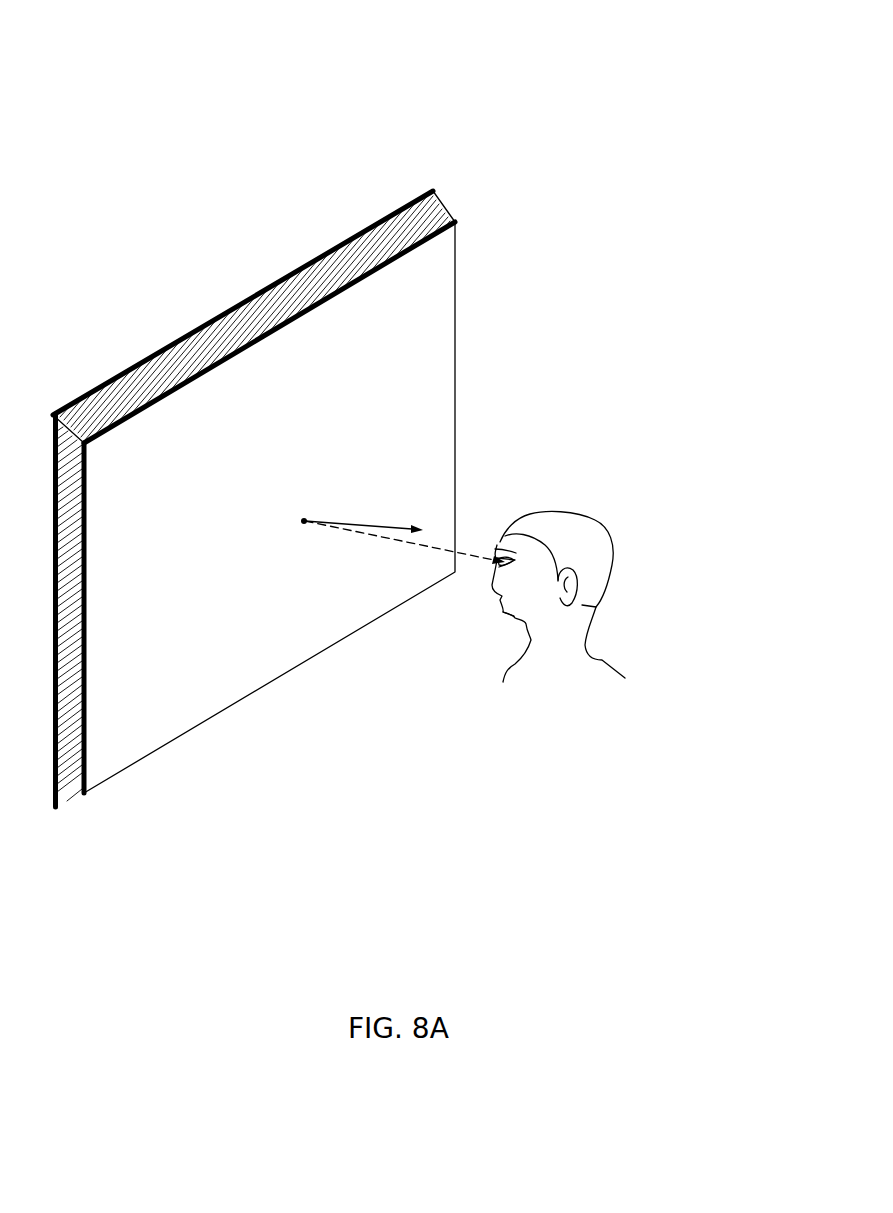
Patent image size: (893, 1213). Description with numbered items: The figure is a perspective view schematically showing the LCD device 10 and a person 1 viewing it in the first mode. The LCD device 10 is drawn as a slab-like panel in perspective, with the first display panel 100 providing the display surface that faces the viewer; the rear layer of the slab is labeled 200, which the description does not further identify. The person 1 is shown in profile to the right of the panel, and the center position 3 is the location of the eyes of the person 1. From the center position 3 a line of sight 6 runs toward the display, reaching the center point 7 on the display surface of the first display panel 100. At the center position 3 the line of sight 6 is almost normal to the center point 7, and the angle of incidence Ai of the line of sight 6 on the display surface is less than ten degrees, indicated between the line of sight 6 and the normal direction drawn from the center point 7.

The first display panel 100 is at (455, 222).
The transparent substrate 200 is at (433, 191).
The LCD device 10 is at (84, 795).
The center point 7 is at (303, 519).
The angle of incidence Ai is at (378, 536).
The line of sight 6 is at (391, 536).
The person 1 is at (615, 665).
The center position 3 is at (497, 546).